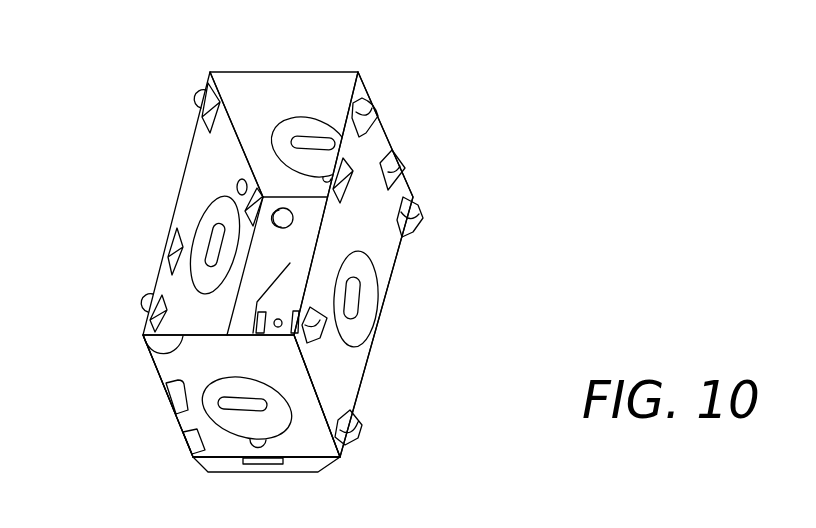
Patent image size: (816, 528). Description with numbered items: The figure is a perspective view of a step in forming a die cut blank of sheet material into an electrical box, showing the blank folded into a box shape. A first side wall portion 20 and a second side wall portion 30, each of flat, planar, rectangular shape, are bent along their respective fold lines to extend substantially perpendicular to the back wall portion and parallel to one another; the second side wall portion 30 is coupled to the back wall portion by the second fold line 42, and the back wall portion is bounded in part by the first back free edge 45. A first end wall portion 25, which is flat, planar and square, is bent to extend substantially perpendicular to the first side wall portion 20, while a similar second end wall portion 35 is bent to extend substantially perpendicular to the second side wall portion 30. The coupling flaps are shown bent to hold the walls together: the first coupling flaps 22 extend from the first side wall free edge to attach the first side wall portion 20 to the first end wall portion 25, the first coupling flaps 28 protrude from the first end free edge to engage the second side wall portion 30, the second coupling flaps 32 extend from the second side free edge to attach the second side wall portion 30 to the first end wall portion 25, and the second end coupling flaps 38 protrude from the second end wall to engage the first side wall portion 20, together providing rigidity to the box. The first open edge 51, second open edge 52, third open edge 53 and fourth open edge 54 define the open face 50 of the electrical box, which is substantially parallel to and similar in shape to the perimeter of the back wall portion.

The first side wall portion 20 is at (175, 203).
The first coupling flaps 22 is at (193, 449).
The first end wall portion 25 is at (203, 357).
The first coupling flaps 28 is at (393, 172).
The second side wall portion 30 is at (395, 250).
The second coupling flaps 32 is at (375, 113).
The second end wall portion 35 is at (332, 90).
The second end coupling flaps 38 is at (175, 400).
The second fold line 42 is at (381, 315).
The first back free edge 45 is at (318, 472).
The open face 50 is at (253, 133).
The first open edge 51 is at (187, 157).
The second open edge 52 is at (382, 208).
The third open edge 53 is at (291, 72).
The fourth open edge 54 is at (170, 352).